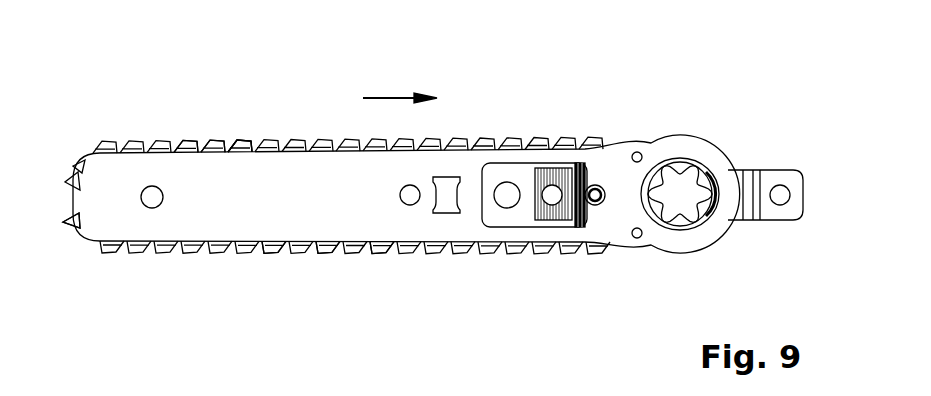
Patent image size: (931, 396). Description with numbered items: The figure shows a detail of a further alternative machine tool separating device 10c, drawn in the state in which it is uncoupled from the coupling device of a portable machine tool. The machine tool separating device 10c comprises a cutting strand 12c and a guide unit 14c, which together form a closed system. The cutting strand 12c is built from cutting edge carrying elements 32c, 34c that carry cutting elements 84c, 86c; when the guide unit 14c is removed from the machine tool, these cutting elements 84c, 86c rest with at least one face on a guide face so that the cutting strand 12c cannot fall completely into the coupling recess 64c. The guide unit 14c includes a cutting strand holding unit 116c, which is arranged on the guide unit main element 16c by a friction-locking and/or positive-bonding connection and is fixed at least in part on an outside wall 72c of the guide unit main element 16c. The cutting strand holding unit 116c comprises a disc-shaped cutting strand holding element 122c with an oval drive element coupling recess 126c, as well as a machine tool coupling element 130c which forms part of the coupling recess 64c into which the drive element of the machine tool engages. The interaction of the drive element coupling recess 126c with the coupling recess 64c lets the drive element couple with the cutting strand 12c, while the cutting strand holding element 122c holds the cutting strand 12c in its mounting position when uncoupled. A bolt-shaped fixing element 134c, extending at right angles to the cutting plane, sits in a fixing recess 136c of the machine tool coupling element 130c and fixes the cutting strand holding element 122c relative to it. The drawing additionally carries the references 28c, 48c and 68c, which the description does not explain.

The machine tool separating device 10c is at (737, 78).
The cutting strand 12c is at (120, 150).
The guide unit 14c is at (221, 232).
The guide unit main element 16c is at (274, 232).
The cutting plane 28c is at (80, 262).
The cutting edge carrying element 32c is at (178, 151).
The cutting edge carrying element 34c is at (212, 150).
The cutting direction 48c is at (390, 97).
The coupling recess 64c is at (650, 182).
The guide groove 68c is at (382, 232).
The outside wall 72c is at (327, 232).
The cutting element 84c is at (196, 150).
The cutting element 86c is at (230, 150).
The cutting strand holding unit 116c is at (600, 106).
The cutting strand holding element 122c is at (724, 217).
The drive element coupling recess 126c is at (704, 168).
The machine tool coupling element 130c is at (678, 245).
The fixing element 134c is at (582, 236).
The fixing recess 136c is at (601, 204).